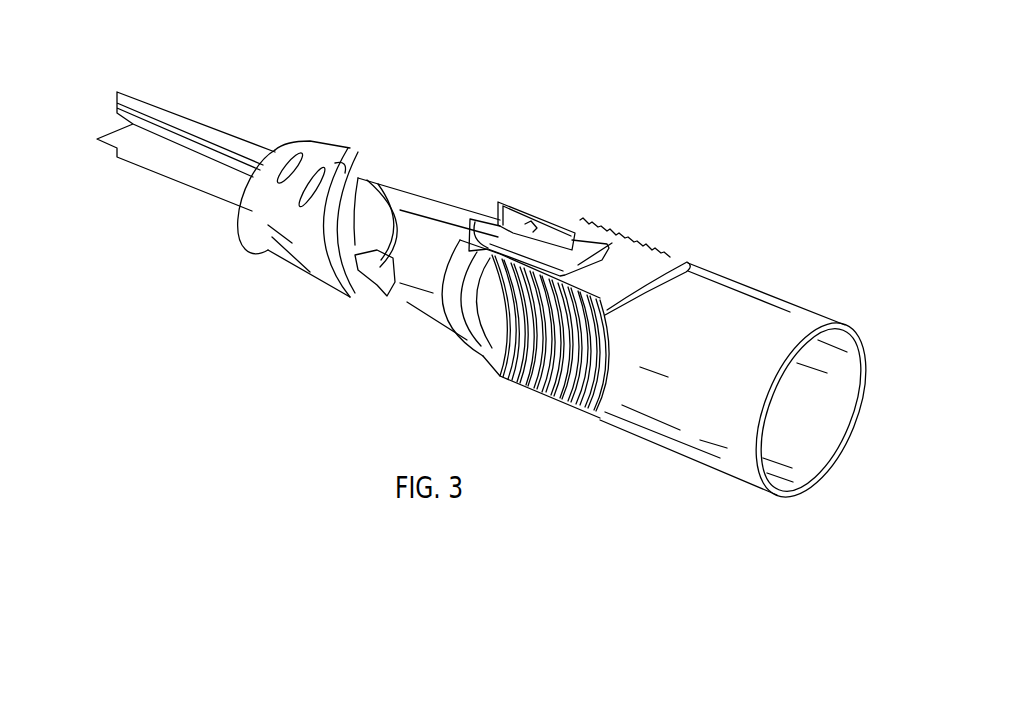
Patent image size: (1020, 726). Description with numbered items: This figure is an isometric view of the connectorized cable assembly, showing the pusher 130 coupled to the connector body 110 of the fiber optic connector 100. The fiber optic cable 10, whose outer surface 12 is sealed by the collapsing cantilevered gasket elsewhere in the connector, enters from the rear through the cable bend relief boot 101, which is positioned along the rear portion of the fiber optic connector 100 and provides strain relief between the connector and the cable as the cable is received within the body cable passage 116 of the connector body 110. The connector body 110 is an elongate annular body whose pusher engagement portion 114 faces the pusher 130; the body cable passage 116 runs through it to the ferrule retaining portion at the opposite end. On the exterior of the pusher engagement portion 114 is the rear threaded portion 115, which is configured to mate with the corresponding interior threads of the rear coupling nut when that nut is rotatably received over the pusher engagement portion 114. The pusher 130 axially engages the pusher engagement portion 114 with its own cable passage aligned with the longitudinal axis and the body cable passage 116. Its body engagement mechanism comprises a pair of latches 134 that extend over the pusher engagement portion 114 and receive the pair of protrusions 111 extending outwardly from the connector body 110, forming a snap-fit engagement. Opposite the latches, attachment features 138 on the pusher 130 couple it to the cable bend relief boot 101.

The fiber optic cable 10 is at (112, 176).
The outer surface 12 is at (172, 137).
The fiber optic connector 100 is at (790, 57).
The cable bend relief boot 101 is at (268, 217).
The connector body 110 is at (787, 327).
The protrusions 111 is at (538, 235).
The pusher engagement portion 114 is at (630, 265).
The rear threaded portion 115 is at (636, 228).
The body cable passage 116 is at (826, 427).
The pusher 130 is at (425, 272).
The latches 134 is at (585, 242).
The attachment features 138 is at (380, 265).